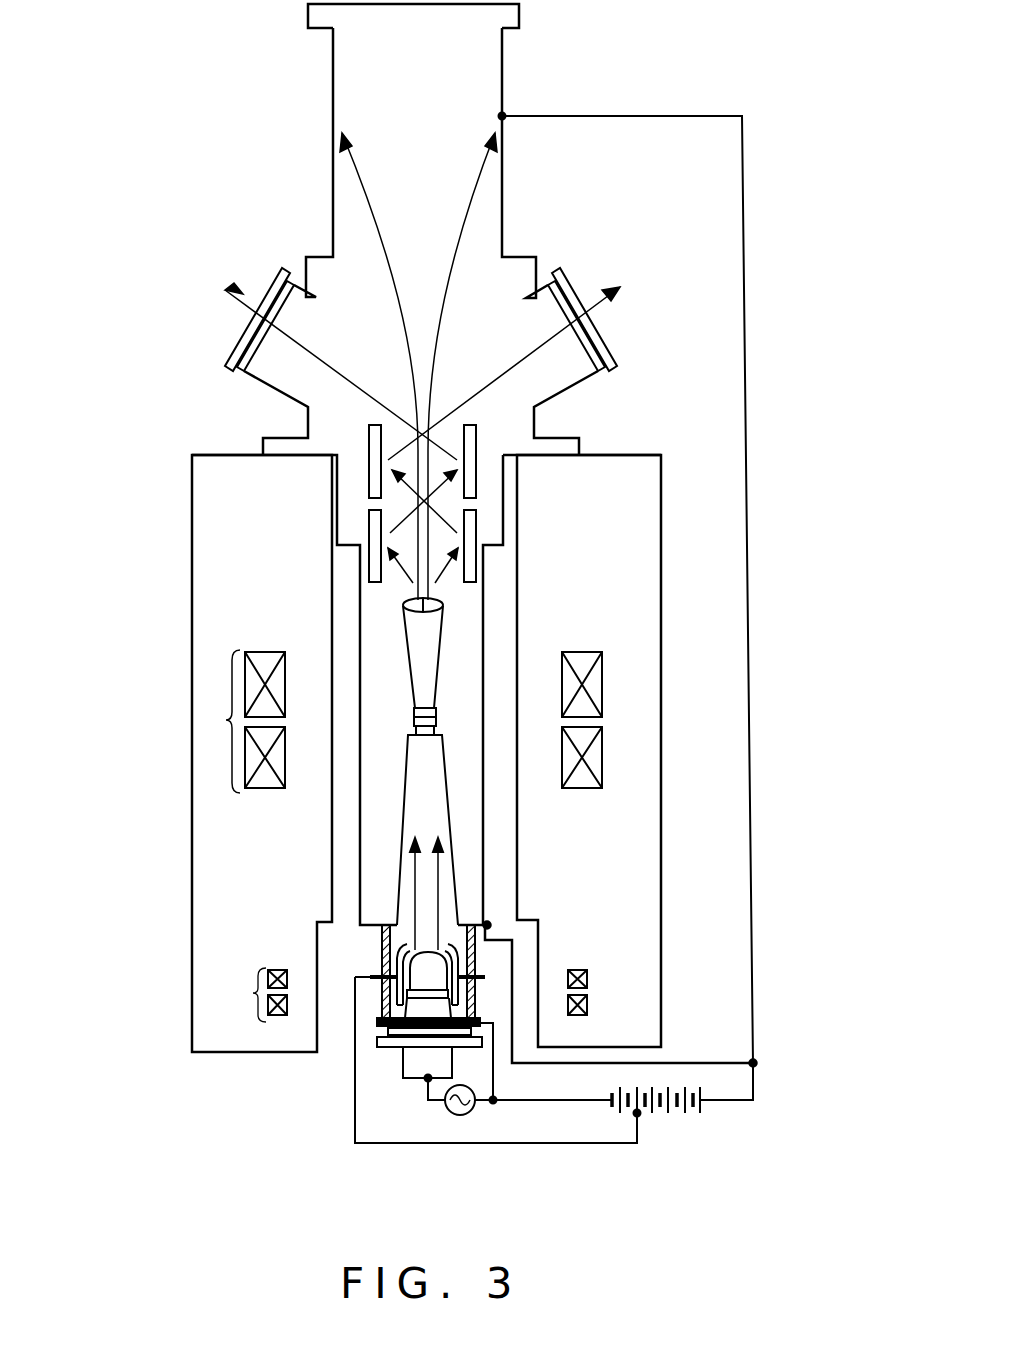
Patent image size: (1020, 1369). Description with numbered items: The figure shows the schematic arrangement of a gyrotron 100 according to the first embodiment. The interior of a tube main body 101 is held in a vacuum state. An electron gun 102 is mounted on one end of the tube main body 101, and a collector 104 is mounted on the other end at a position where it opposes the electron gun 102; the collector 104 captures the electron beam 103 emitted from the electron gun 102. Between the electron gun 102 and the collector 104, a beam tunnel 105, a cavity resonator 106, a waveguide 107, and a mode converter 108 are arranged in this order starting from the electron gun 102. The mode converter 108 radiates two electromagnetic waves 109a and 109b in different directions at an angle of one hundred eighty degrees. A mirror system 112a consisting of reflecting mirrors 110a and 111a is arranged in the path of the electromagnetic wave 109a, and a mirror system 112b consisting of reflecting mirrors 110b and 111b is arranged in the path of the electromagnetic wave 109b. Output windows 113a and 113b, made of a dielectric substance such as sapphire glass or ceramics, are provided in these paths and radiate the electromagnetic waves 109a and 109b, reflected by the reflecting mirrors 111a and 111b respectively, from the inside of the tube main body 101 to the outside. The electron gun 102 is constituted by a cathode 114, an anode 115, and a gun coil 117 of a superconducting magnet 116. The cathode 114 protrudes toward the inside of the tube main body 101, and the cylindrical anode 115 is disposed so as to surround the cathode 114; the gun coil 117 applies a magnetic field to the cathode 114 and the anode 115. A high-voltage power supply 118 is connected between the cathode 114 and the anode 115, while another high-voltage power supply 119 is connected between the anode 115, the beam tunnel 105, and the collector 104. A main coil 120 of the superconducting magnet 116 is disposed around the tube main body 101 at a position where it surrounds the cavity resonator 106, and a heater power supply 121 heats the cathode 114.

The gyrotron 100 is at (210, 100).
The tube main body 101 is at (300, 172).
The electron gun 102 is at (332, 1052).
The electron beam 103 is at (470, 200).
The collector 104 is at (504, 80).
The beam tunnel 105 is at (450, 832).
The cavity resonator 106 is at (434, 730).
The waveguide 107 is at (404, 645).
The mode converter 108 is at (462, 618).
The electromagnetic wave 109a is at (338, 372).
The electromagnetic wave 109b is at (497, 372).
The reflecting mirror 110a is at (368, 537).
The reflecting mirror 110b is at (480, 537).
The reflecting mirror 111a is at (478, 460).
The reflecting mirror 111b is at (366, 458).
The mirror system 112a is at (262, 490).
The mirror system 112b is at (575, 490).
The output window 113a is at (275, 300).
The output window 113b is at (580, 336).
The cathode 114 is at (428, 965).
The anode 115 is at (483, 970).
The superconducting magnet 116 is at (661, 596).
The gun coil 117 is at (399, 995).
The high-voltage power supply 118 is at (674, 1116).
The high-voltage power supply 119 is at (610, 1102).
The main coil 120 is at (226, 720).
The heater power supply 121 is at (455, 1110).